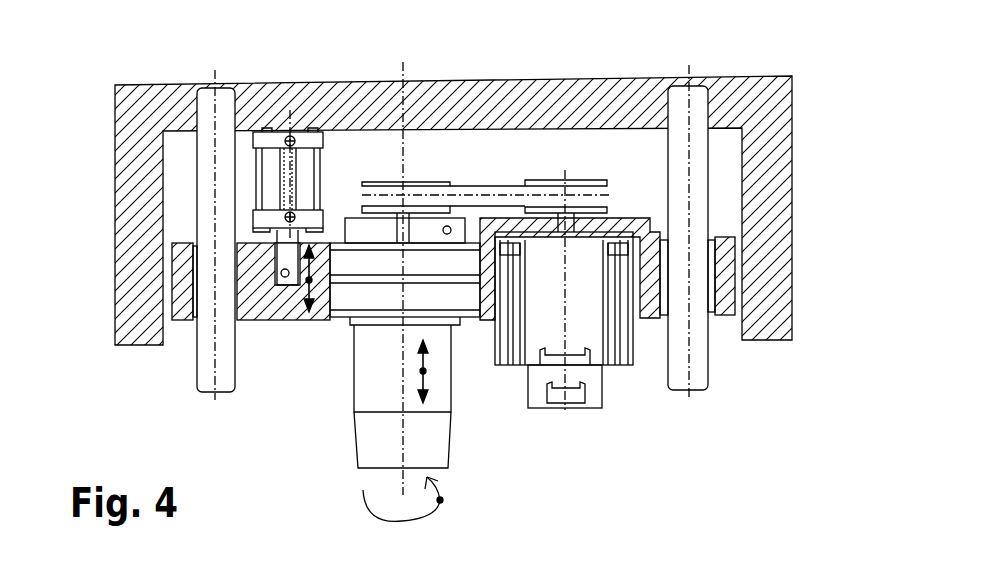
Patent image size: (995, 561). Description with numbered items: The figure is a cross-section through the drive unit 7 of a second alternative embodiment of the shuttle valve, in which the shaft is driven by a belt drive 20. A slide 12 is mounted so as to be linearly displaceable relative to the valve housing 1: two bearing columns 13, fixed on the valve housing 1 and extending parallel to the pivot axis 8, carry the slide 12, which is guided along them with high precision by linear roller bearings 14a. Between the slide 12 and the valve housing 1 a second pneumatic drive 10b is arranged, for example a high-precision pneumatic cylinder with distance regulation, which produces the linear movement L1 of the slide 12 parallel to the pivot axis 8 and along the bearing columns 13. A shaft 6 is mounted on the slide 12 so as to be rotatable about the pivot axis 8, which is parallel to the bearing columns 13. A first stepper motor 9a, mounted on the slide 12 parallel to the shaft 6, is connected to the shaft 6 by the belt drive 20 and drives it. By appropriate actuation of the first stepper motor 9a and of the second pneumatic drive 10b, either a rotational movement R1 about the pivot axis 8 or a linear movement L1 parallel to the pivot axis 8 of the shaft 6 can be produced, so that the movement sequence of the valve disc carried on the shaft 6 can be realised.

The valve housing 1 is at (130, 165).
The shaft 6 is at (375, 436).
The drive unit 7 is at (130, 33).
The pivot axis 8 is at (403, 62).
The first stepper motor 9a is at (582, 313).
The second pneumatic drive 10b is at (266, 172).
The slide 12 is at (262, 290).
The bearing columns 13 is at (205, 218).
The linear roller bearings 14a is at (186, 292).
The belt drive 20 is at (480, 189).
The linear movement L1 is at (311, 283).
The rotational movement R1 is at (440, 500).